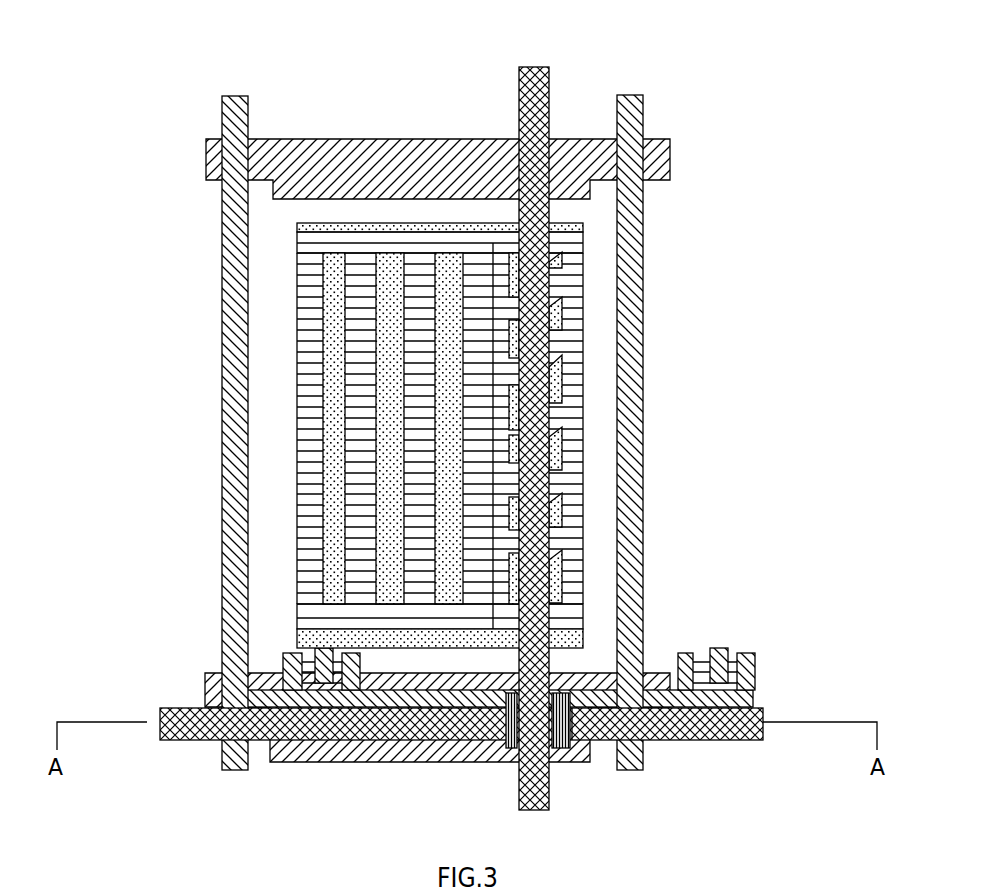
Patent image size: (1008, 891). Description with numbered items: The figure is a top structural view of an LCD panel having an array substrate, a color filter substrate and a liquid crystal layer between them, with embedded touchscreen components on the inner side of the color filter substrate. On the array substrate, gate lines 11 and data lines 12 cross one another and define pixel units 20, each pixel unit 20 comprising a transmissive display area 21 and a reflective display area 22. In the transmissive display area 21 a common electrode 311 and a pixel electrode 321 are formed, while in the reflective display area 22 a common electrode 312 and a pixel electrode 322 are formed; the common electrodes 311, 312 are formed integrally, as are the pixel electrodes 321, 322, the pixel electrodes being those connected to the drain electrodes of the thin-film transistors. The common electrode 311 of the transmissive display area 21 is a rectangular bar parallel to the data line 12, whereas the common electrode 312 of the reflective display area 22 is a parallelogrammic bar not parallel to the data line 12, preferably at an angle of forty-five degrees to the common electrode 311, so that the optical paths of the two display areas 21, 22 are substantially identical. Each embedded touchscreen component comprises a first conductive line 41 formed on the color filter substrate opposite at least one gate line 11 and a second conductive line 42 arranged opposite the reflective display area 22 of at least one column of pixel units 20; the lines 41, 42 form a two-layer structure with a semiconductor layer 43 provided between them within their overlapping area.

The gate line 11 is at (206, 158).
The data line 12 is at (233, 770).
The pixel unit 20 is at (600, 40).
The transmissive display area 21 is at (498, 60).
The reflective display area 22 is at (585, 72).
The common electrode 311 is at (310, 497).
The common electrode 312 is at (575, 473).
The pixel electrode 321 is at (330, 393).
The pixel electrode 322 is at (553, 372).
The first conductive line 41 is at (765, 712).
The second conductive line 42 is at (560, 598).
The semiconductor layer 43 is at (507, 750).